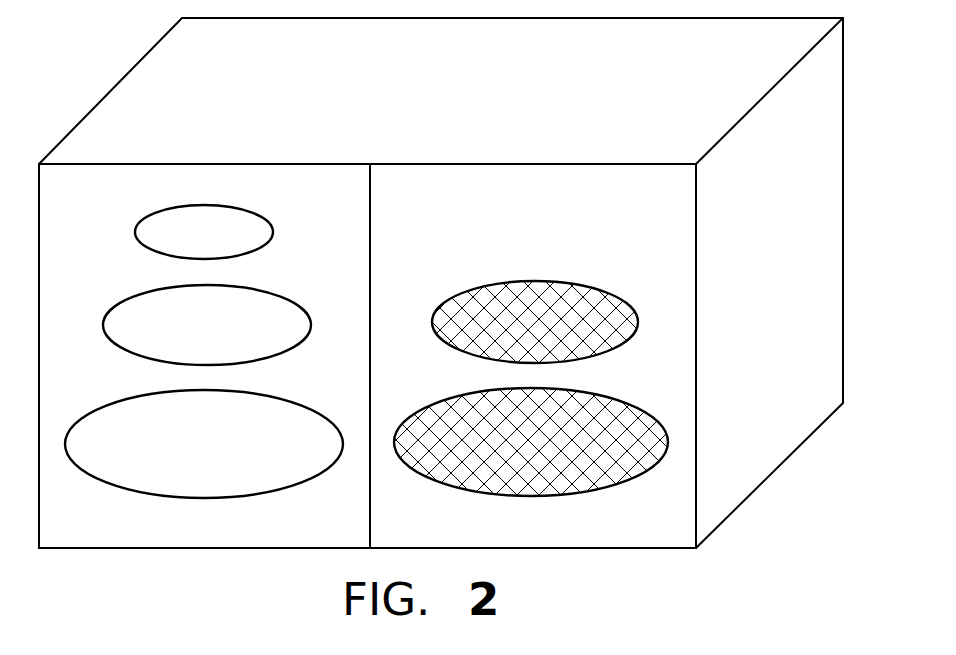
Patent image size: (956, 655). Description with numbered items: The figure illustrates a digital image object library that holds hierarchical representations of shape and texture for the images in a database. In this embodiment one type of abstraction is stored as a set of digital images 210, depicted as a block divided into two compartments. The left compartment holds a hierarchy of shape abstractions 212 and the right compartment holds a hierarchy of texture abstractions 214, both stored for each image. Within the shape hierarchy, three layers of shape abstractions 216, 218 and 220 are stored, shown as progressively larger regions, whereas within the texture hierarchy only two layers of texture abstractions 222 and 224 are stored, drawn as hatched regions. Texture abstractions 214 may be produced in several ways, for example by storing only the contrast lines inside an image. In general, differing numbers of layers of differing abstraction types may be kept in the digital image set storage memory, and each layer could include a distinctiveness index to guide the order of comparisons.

The set of digital images 210 is at (758, 552).
The hierarchy of shape abstractions 212 is at (178, 538).
The hierarchy of texture abstractions 214 is at (507, 536).
The layer of shape abstraction 216 is at (178, 247).
The layer of shape abstraction 218 is at (178, 335).
The layer of shape abstraction 220 is at (176, 458).
The layer of texture abstraction 222 is at (603, 315).
The layer of texture abstraction 224 is at (607, 440).